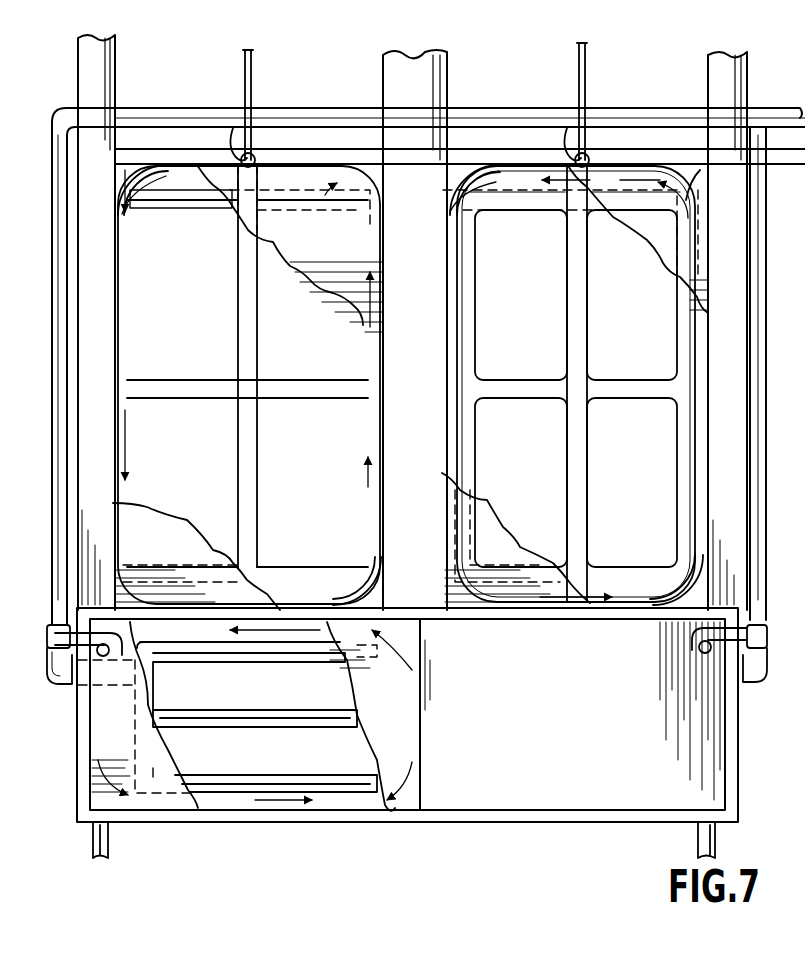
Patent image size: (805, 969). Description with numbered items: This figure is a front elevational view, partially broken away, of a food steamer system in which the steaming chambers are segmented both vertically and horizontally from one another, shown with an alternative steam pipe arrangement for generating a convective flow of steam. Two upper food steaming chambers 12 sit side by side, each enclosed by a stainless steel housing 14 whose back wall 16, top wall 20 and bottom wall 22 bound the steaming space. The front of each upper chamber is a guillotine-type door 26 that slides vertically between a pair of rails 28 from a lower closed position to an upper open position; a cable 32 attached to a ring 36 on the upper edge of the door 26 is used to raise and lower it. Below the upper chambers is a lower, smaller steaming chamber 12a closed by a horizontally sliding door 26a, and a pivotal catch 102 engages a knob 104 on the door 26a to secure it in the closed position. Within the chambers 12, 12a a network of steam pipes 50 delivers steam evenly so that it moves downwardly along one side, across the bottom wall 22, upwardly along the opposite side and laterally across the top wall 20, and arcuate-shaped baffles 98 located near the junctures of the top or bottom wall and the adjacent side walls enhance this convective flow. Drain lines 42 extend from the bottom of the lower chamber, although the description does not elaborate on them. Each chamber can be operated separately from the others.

The food steaming chamber 12 is at (194, 325).
The lower steaming chamber 12a is at (262, 716).
The housing 14 is at (137, 154).
The back wall 16 is at (198, 259).
The top wall 20 is at (312, 142).
The bottom wall 22 is at (303, 605).
The guillotine-type door 26 is at (662, 232).
The horizontally sliding door 26a is at (103, 738).
The rails 28 is at (115, 47).
The cable 32 is at (255, 76).
The ring 36 is at (240, 134).
The drain pipe 42 is at (108, 842).
The steam pipes 50 is at (258, 311).
The arcuate-shaped baffles 98 is at (130, 180).
The pivotal catch 102 is at (45, 632).
The knob 104 is at (107, 656).